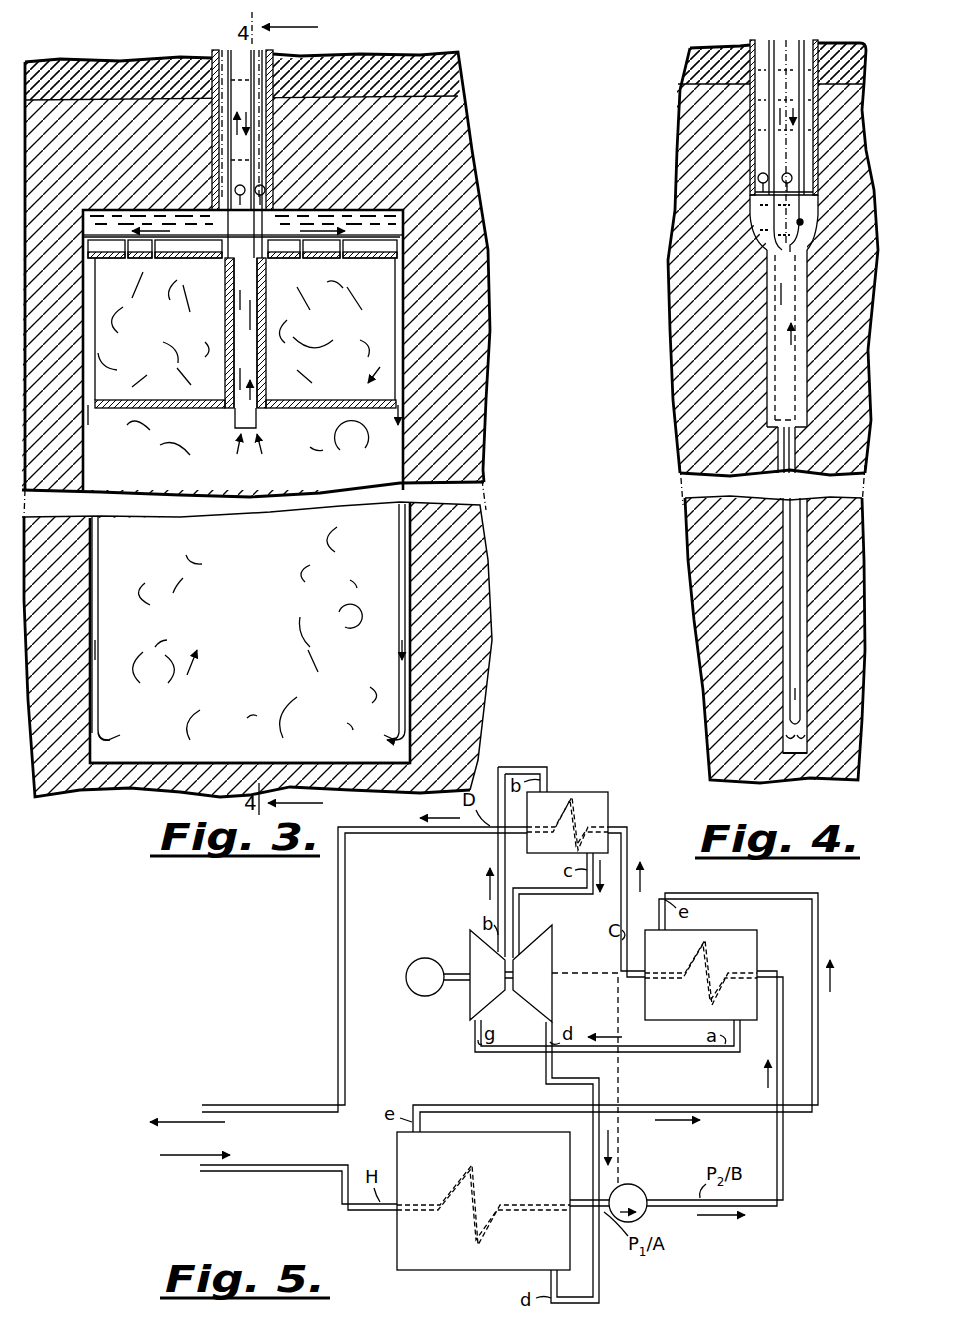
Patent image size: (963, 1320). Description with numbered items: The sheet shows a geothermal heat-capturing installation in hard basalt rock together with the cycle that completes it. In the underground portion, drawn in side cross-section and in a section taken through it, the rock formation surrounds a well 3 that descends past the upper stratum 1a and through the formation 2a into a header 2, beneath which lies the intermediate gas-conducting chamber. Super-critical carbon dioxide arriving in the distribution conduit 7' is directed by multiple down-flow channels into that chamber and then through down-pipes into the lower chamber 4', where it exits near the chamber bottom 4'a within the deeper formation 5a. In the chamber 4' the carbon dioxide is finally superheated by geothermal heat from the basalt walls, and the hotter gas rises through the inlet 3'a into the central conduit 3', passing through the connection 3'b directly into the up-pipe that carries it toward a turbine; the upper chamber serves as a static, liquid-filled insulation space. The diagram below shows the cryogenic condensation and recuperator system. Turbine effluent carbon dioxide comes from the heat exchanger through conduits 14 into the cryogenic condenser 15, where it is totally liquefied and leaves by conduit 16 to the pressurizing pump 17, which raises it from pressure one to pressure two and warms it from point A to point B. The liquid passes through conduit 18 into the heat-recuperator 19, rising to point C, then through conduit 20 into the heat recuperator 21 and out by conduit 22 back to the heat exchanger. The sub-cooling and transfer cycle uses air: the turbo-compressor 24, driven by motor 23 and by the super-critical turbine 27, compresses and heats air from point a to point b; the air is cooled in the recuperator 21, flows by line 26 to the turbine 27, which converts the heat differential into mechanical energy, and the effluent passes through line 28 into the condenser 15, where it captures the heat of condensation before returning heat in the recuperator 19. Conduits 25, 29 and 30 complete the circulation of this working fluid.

In FIG. 3, the upper earth stratum 1a is at (440, 80).
In FIG. 4, the upper earth stratum 1a is at (700, 77).
In FIG. 3, the header 2 is at (405, 212).
In FIG. 4, the header 2 is at (820, 200).
In FIG. 3, the earth formation 2a is at (470, 272).
In FIG. 4, the earth formation 2a is at (695, 378).
In FIG. 3, the distribution conduit 7' is at (241, 263).
In FIG. 4, the distribution conduit 7' is at (822, 223).
In FIG. 3, the conduit connection to up-pipe 3'b is at (258, 167).
In FIG. 4, the conduit connection to up-pipe 3'b is at (695, 235).
In FIG. 3, the conduit 3' is at (258, 333).
In FIG. 3, the inlet 3'a is at (269, 431).
In FIG. 4, the inlet 3'a is at (842, 435).
In FIG. 4, the well 3 is at (828, 338).
In FIG. 3, the chamber 4' is at (250, 632).
In FIG. 3, the chamber bottom 4'a is at (250, 746).
In FIG. 4, the chamber bottom 4'a is at (846, 759).
In FIG. 3, the lower earth formation 5a is at (455, 575).
In FIG. 4, the lower earth formation 5a is at (708, 565).
In FIG. 5, the conduits 14 is at (350, 1172).
In FIG. 5, the cryogenic condenser 15 is at (397, 1240).
In FIG. 5, the conduit 16 is at (620, 1185).
In FIG. 5, the pressurizing pump 17 is at (648, 1190).
In FIG. 5, the conduit 18 is at (770, 1208).
In FIG. 5, the heat-recuperator 19 is at (757, 950).
In FIG. 5, the conduit 20 is at (628, 836).
In FIG. 5, the heat recuperator 21 is at (572, 792).
In FIG. 5, the conduit 22 is at (338, 1003).
In FIG. 5, the motor 23 is at (420, 996).
In FIG. 5, the turbo-compressor 24 is at (470, 930).
In FIG. 5, the conduit 25 is at (497, 838).
In FIG. 5, the conduit 26 is at (519, 903).
In FIG. 5, the super-critical turbine 27 is at (548, 980).
In FIG. 5, the conduit 28 is at (546, 1065).
In FIG. 5, the conduit 29 is at (680, 1105).
In FIG. 5, the conduit 30 is at (475, 1036).